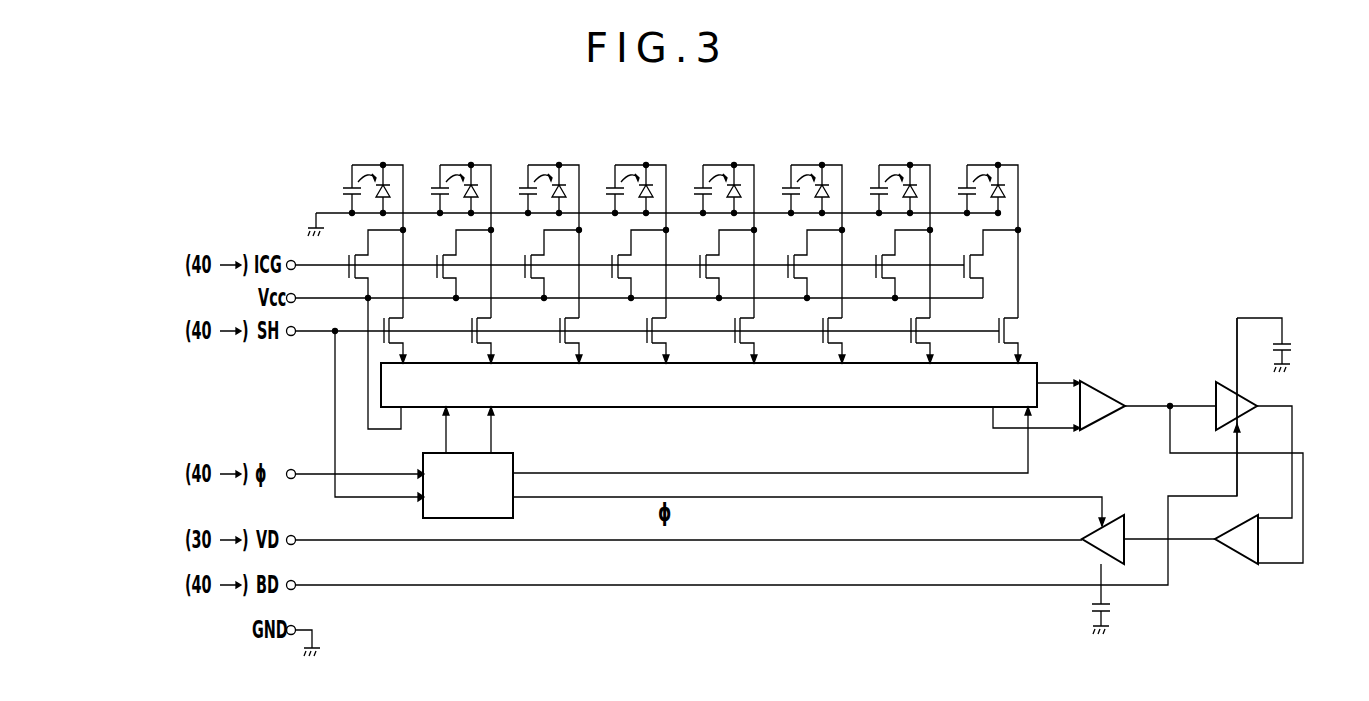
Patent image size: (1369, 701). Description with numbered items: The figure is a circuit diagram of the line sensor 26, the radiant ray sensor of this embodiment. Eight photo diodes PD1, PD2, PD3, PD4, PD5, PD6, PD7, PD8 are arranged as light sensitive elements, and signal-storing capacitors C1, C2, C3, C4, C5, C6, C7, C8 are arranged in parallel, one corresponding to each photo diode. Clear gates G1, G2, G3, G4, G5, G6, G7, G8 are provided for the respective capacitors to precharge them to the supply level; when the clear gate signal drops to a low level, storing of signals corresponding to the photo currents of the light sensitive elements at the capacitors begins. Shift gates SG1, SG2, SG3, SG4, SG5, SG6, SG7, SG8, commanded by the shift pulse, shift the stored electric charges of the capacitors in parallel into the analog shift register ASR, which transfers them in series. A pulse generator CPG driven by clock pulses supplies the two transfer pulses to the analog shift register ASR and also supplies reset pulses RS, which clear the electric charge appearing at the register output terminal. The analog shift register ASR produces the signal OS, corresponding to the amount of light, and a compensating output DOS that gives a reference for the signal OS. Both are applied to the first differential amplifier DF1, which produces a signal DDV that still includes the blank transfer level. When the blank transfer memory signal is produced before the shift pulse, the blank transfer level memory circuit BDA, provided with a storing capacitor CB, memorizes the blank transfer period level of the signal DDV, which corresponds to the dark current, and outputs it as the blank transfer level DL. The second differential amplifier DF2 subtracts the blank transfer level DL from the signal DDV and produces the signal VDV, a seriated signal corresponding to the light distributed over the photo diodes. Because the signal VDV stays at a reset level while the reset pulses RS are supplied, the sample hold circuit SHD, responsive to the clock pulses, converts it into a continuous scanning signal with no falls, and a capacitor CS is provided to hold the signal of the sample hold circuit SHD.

The line sensor 26 is at (1072, 168).
The capacitor C1 is at (348, 184).
The capacitor C2 is at (434, 171).
The capacitor C3 is at (522, 171).
The capacitor C4 is at (609, 171).
The capacitor C5 is at (697, 171).
The capacitor C6 is at (785, 171).
The capacitor C7 is at (873, 171).
The capacitor C8 is at (961, 171).
The photo diode PD1 is at (385, 182).
The photo diode PD2 is at (471, 171).
The photo diode PD3 is at (559, 171).
The photo diode PD4 is at (646, 171).
The photo diode PD5 is at (734, 171).
The photo diode PD6 is at (822, 171).
The photo diode PD7 is at (910, 171).
The photo diode PD8 is at (998, 171).
The clear gate G1 is at (364, 261).
The clear gate G2 is at (464, 265).
The clear gate G3 is at (552, 265).
The clear gate G4 is at (639, 265).
The clear gate G5 is at (727, 265).
The clear gate G6 is at (815, 265).
The clear gate G7 is at (903, 265).
The clear gate G8 is at (991, 264).
The shift gate SG1 is at (398, 330).
The shift gate SG2 is at (499, 335).
The shift gate SG3 is at (587, 335).
The shift gate SG4 is at (674, 335).
The shift gate SG5 is at (762, 335).
The shift gate SG6 is at (850, 335).
The shift gate SG7 is at (938, 335).
The shift gate SG8 is at (1029, 333).
The analog shift register ASR is at (619, 408).
The pulse generator CPG is at (513, 505).
The reset pulses RS is at (772, 440).
The output signal OS is at (1058, 371).
The compensating output signal DOS is at (1036, 416).
The first differential amplifier DF1 is at (1088, 381).
The output signal of first differential amplifier DDV is at (1214, 469).
The blank transfer level memory circuit BDA is at (1216, 392).
The storing capacitor CB is at (1287, 342).
The blank transfer level DL is at (1274, 447).
The second differential amplifier DF2 is at (1228, 549).
The subtraction result signal VDV is at (1169, 552).
The sample hold circuit SHD is at (1092, 547).
The capacitor CS is at (1112, 608).